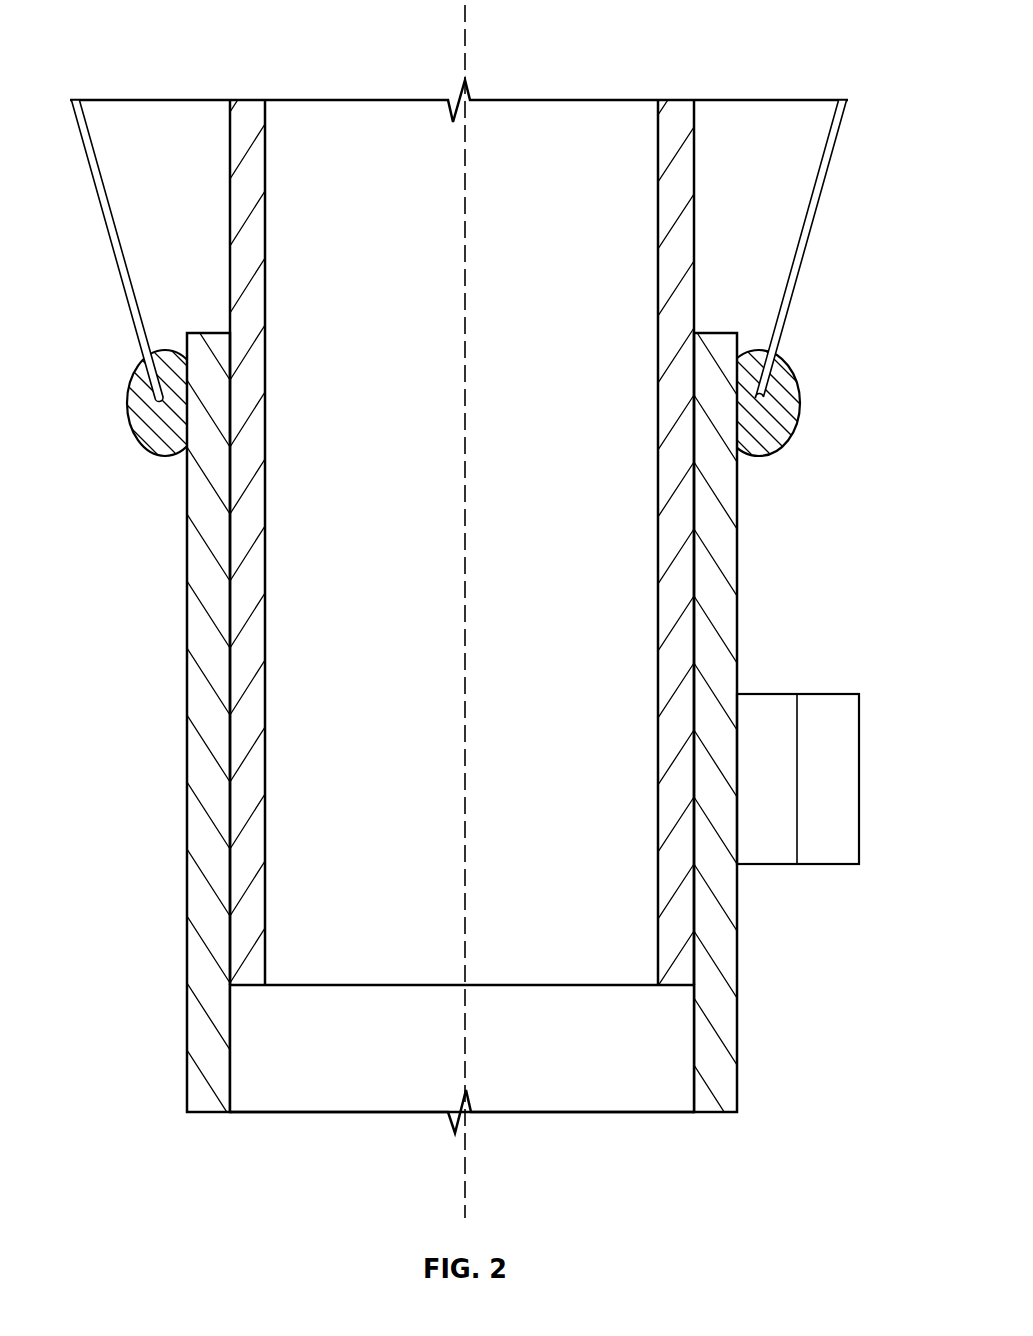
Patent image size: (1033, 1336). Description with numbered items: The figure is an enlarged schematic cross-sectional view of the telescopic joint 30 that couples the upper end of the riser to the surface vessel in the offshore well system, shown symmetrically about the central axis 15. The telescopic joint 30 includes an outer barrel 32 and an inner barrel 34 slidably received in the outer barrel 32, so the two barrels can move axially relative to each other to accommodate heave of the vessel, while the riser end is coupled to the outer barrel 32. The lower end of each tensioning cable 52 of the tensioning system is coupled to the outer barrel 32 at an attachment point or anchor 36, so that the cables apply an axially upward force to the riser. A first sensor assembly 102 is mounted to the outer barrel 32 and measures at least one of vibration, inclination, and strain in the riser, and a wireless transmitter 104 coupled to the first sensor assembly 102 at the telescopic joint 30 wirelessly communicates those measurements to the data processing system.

The central axis 15 is at (468, 33).
The telescopic joint 30 is at (139, 65).
The outer barrel 32 is at (198, 786).
The inner barrel 34 is at (252, 969).
The anchor 36 is at (146, 424).
The tensioning cable 52 is at (110, 241).
The first sensor assembly 102 is at (762, 853).
The wireless transmitter 104 is at (835, 808).